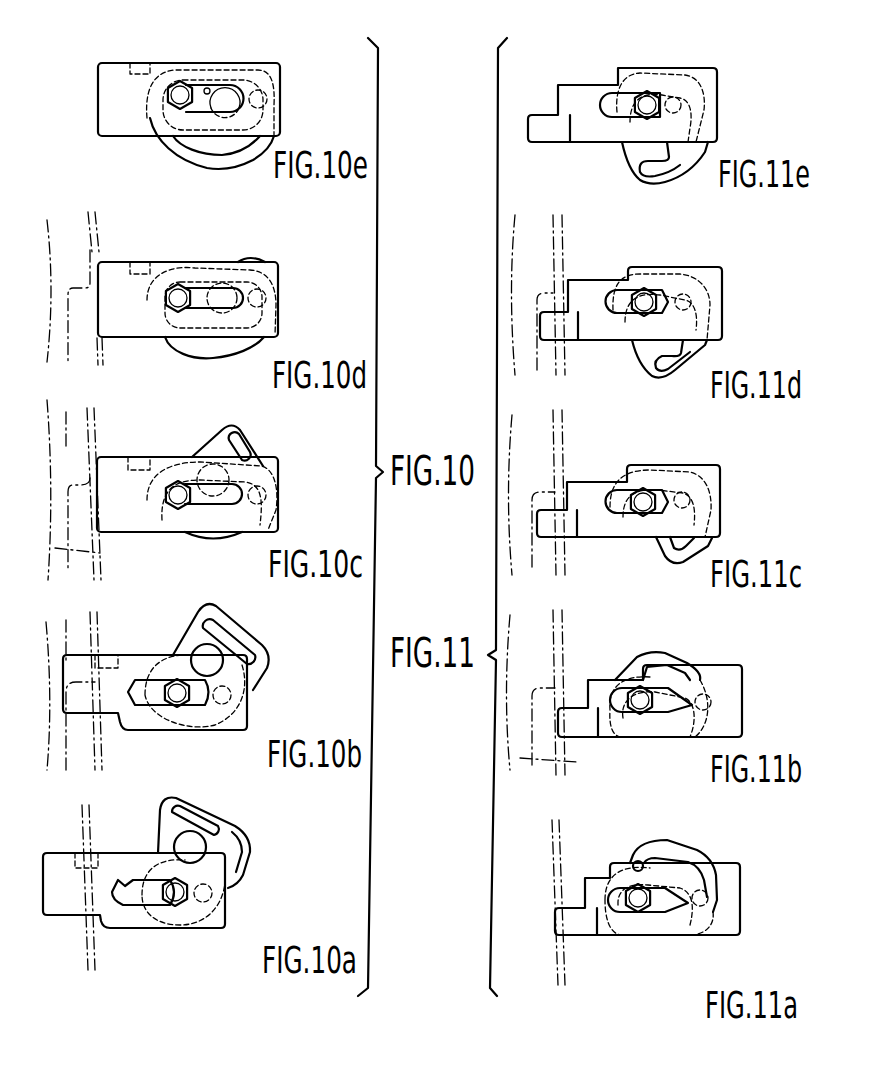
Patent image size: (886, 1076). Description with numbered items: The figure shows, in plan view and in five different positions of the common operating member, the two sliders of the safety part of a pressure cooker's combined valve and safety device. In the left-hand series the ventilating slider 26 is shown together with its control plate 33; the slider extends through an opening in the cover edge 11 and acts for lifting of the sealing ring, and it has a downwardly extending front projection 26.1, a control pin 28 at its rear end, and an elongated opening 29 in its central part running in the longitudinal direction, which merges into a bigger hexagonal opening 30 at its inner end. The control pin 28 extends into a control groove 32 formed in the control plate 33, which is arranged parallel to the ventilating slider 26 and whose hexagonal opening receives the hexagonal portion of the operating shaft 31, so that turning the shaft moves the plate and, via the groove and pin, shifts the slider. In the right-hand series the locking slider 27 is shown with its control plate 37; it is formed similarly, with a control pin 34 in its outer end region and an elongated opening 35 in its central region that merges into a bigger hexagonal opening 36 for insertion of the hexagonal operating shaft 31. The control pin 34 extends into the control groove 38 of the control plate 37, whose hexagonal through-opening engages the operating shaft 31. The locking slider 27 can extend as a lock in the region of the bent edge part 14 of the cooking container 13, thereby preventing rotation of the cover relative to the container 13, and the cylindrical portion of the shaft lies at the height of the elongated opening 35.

In FIG. 10C, the cover edge 11 is at (97, 420).
In FIG. 11D, the cover edge 11 is at (562, 365).
In FIG. 11A, the cover edge 11 is at (552, 963).
In FIG. 10C, the cooking container 13 is at (90, 563).
In FIG. 11B, the cooking container 13 is at (561, 761).
In FIG. 10C, the edge part 14 is at (61, 483).
In FIG. 11C, the edge part 14 is at (535, 442).
In FIG. 11B, the edge part 14 is at (530, 648).
In FIG. 10E, the ventilating slider 26 is at (113, 68).
In FIG. 10D, the ventilating slider 26 is at (129, 310).
In FIG. 10C, the ventilating slider 26 is at (131, 505).
In FIG. 10B, the ventilating slider 26 is at (95, 718).
In FIG. 10A, the ventilating slider 26 is at (127, 925).
In FIG. 10B, the front projection 26.1 is at (108, 652).
In FIG. 10A, the front projection 26.1 is at (85, 848).
In FIG. 11E, the locking slider 27 is at (568, 93).
In FIG. 11D, the locking slider 27 is at (590, 285).
In FIG. 11C, the locking slider 27 is at (590, 488).
In FIG. 11B, the locking slider 27 is at (600, 690).
In FIG. 11A, the locking slider 27 is at (595, 888).
In FIG. 10E, the control pin 28 is at (260, 90).
In FIG. 10D, the control pin 28 is at (257, 298).
In FIG. 10C, the control pin 28 is at (257, 495).
In FIG. 10B, the control pin 28 is at (222, 695).
In FIG. 10A, the control pin 28 is at (242, 872).
In FIG. 10E, the elongated opening 29 is at (208, 88).
In FIG. 10D, the elongated opening 29 is at (214, 298).
In FIG. 10C, the elongated opening 29 is at (213, 494).
In FIG. 10B, the elongated opening 29 is at (168, 692).
In FIG. 10A, the elongated opening 29 is at (136, 882).
In FIG. 10E, the hexagonal opening 30 is at (177, 83).
In FIG. 10D, the hexagonal opening 30 is at (178, 298).
In FIG. 10C, the hexagonal opening 30 is at (178, 495).
In FIG. 10B, the hexagonal opening 30 is at (177, 693).
In FIG. 10A, the hexagonal opening 30 is at (122, 880).
In FIG. 10E, the operating shaft 31 is at (165, 117).
In FIG. 10D, the operating shaft 31 is at (178, 298).
In FIG. 10C, the operating shaft 31 is at (178, 495).
In FIG. 10B, the operating shaft 31 is at (177, 693).
In FIG. 10A, the operating shaft 31 is at (173, 906).
In FIG. 10E, the control groove 32 is at (220, 152).
In FIG. 10D, the control groove 32 is at (211, 308).
In FIG. 10C, the control groove 32 is at (212, 482).
In FIG. 10B, the control groove 32 is at (207, 665).
In FIG. 10A, the control groove 32 is at (222, 826).
In FIG. 10E, the control plate 33 is at (183, 150).
In FIG. 10A, the control plate 33 is at (245, 846).
In FIG. 11E, the control pin 34 is at (680, 98).
In FIG. 11D, the control pin 34 is at (683, 302).
In FIG. 11C, the control pin 34 is at (682, 500).
In FIG. 11B, the control pin 34 is at (703, 702).
In FIG. 11A, the control pin 34 is at (708, 910).
In FIG. 11E, the elongated opening 35 is at (607, 93).
In FIG. 11D, the elongated opening 35 is at (637, 301).
In FIG. 11C, the elongated opening 35 is at (637, 501).
In FIG. 11B, the elongated opening 35 is at (651, 700).
In FIG. 11A, the elongated opening 35 is at (660, 915).
In FIG. 11E, the hexagonal opening 36 is at (655, 93).
In FIG. 11D, the hexagonal opening 36 is at (644, 302).
In FIG. 11C, the hexagonal opening 36 is at (643, 502).
In FIG. 11B, the hexagonal opening 36 is at (640, 700).
In FIG. 11A, the hexagonal opening 36 is at (680, 912).
In FIG. 11E, the control plate 37 is at (692, 160).
In FIG. 11D, the control plate 37 is at (661, 326).
In FIG. 11C, the control plate 37 is at (661, 516).
In FIG. 11B, the control plate 37 is at (659, 694).
In FIG. 11A, the control plate 37 is at (688, 848).
In FIG. 11E, the control groove 38 is at (637, 166).
In FIG. 11D, the control groove 38 is at (672, 355).
In FIG. 11C, the control groove 38 is at (682, 543).
In FIG. 11A, the control groove 38 is at (636, 861).